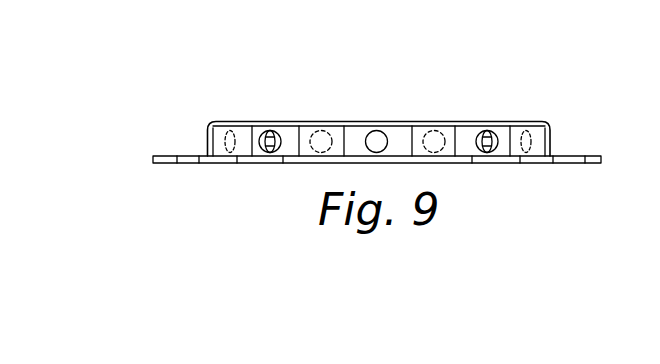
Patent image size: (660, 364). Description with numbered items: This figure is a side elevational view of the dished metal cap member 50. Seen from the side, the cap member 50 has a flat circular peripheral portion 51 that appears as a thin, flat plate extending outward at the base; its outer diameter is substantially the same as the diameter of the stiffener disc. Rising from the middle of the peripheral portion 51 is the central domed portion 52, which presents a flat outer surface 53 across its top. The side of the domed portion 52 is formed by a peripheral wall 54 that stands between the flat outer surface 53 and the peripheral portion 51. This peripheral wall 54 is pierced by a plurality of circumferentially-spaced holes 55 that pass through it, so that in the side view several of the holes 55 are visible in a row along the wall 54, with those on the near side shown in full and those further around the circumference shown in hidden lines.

The dished metal cap member 50 is at (532, 93).
The flat circular peripheral portion 51 is at (590, 156).
The central domed portion 52 is at (214, 115).
The flat outer surface 53 is at (310, 121).
The peripheral wall 54 is at (295, 140).
The holes 55 is at (372, 142).